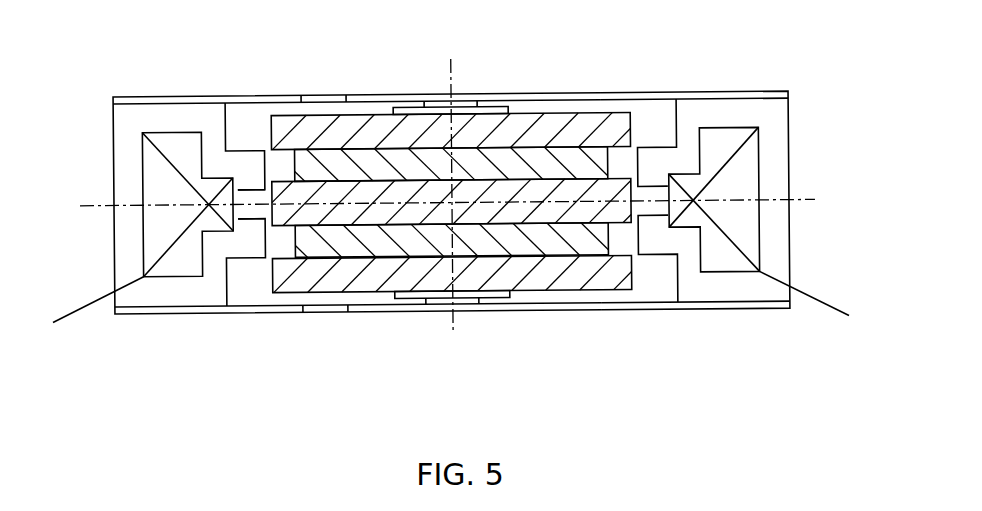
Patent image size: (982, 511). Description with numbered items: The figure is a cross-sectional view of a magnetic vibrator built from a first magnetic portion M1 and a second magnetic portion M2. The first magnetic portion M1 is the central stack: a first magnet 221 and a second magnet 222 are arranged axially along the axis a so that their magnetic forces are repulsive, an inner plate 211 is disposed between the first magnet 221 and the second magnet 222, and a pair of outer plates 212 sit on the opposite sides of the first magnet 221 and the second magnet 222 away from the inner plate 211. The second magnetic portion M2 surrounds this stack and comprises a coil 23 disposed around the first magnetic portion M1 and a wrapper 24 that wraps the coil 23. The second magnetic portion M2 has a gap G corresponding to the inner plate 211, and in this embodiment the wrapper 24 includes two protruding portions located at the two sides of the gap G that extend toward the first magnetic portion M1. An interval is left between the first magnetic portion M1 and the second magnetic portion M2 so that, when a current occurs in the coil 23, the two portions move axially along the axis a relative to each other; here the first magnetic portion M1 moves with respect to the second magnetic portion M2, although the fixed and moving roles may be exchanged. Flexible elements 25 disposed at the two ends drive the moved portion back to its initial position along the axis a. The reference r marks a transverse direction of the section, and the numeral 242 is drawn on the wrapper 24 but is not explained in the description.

The gap G is at (251, 190).
The inner plate 211 is at (322, 194).
The outer plates 212 is at (382, 138).
The first magnet 221 is at (551, 173).
The second magnet 222 is at (323, 249).
The coil 23 is at (713, 143).
The wrapper 24 is at (731, 293).
The right housing recess 242 is at (653, 173).
The flexible elements 25 is at (469, 316).
The first magnetic portion M1 is at (451, 190).
The second magnetic portion M2 is at (450, 222).
The axis a is at (450, 182).
The axis r is at (455, 204).